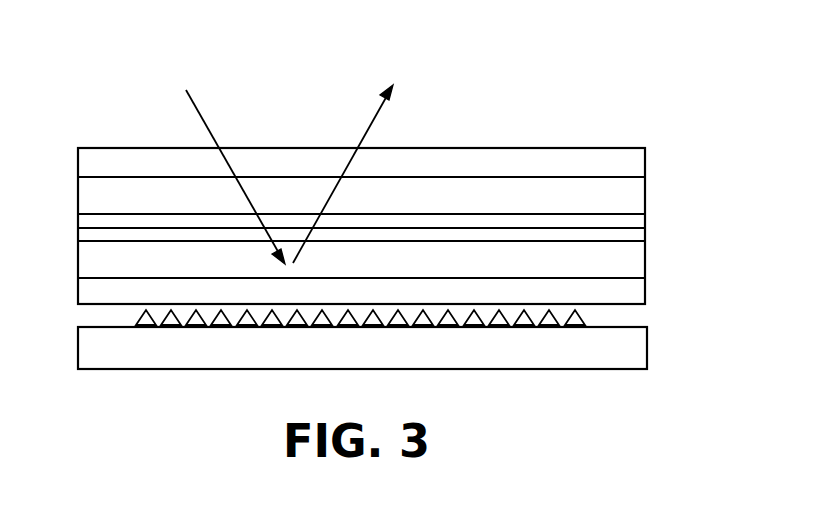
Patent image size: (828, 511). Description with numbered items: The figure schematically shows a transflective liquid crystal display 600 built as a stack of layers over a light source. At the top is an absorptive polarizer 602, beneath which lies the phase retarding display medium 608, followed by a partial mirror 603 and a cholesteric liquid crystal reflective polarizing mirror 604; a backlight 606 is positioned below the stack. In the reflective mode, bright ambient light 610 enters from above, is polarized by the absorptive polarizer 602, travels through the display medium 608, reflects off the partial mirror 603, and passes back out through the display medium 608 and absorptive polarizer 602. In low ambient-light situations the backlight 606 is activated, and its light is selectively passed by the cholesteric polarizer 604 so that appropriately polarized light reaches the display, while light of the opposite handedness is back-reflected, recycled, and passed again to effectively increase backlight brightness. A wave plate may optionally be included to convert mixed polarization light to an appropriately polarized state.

The transflective liquid crystal display 600 is at (502, 108).
The absorptive polarizer 602 is at (645, 167).
The partial mirror 603 is at (645, 262).
The cholesteric liquid crystal reflective polarizing mirror 604 is at (645, 290).
The backlight 606 is at (647, 347).
The phase retarding display medium 608 is at (652, 180).
The bright ambient light 610 is at (203, 117).